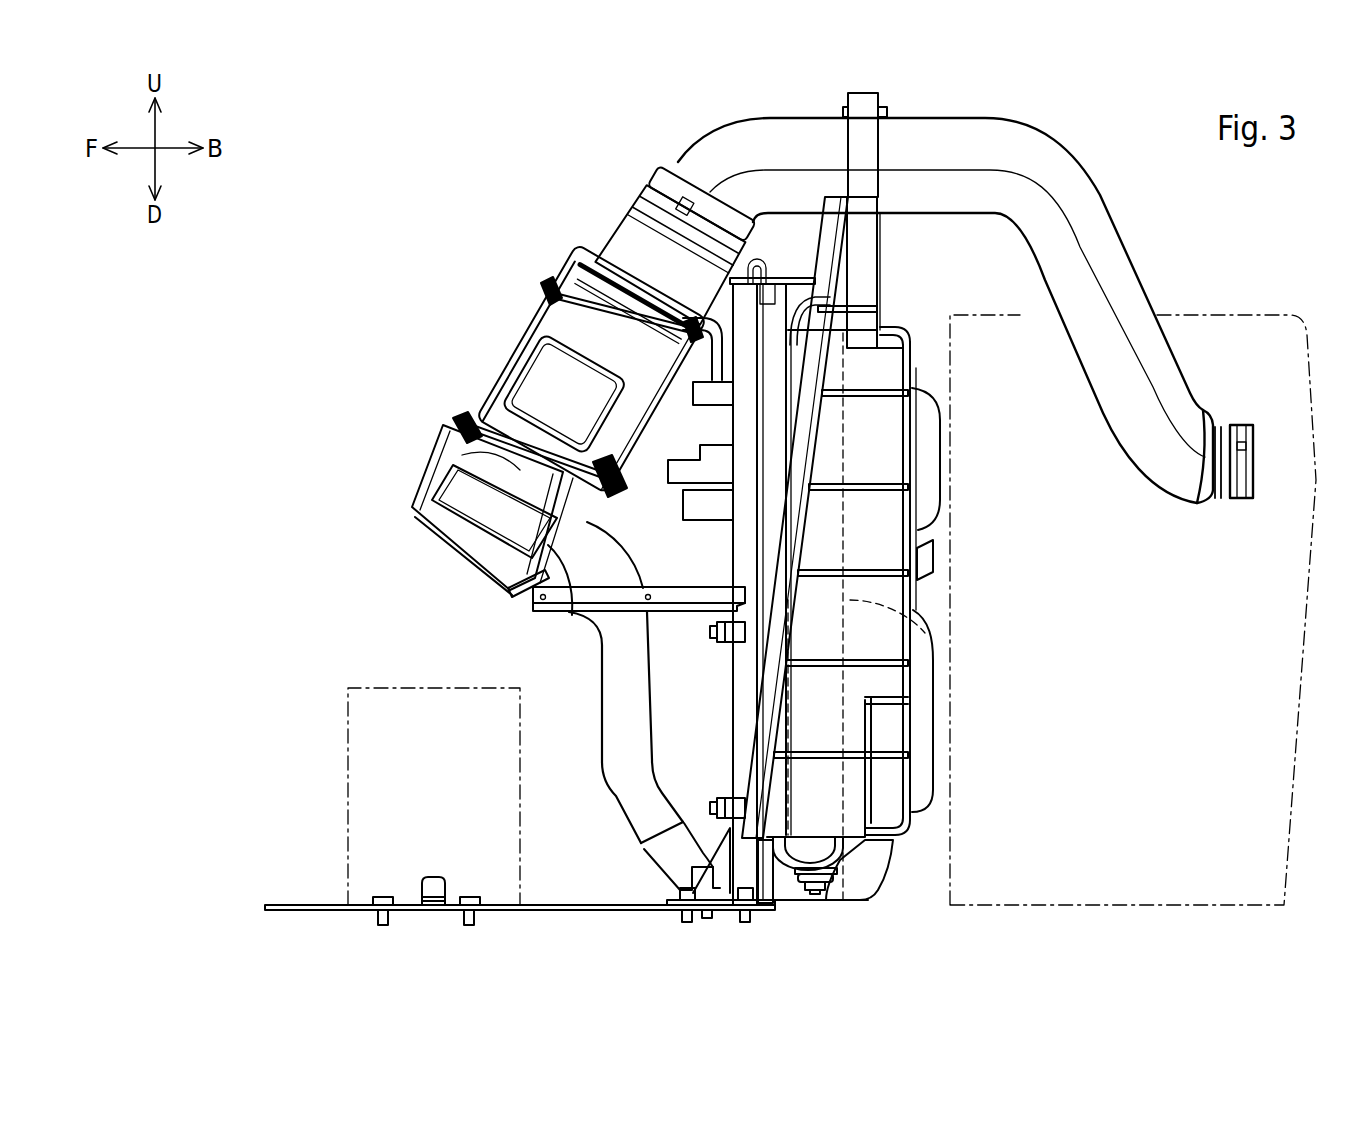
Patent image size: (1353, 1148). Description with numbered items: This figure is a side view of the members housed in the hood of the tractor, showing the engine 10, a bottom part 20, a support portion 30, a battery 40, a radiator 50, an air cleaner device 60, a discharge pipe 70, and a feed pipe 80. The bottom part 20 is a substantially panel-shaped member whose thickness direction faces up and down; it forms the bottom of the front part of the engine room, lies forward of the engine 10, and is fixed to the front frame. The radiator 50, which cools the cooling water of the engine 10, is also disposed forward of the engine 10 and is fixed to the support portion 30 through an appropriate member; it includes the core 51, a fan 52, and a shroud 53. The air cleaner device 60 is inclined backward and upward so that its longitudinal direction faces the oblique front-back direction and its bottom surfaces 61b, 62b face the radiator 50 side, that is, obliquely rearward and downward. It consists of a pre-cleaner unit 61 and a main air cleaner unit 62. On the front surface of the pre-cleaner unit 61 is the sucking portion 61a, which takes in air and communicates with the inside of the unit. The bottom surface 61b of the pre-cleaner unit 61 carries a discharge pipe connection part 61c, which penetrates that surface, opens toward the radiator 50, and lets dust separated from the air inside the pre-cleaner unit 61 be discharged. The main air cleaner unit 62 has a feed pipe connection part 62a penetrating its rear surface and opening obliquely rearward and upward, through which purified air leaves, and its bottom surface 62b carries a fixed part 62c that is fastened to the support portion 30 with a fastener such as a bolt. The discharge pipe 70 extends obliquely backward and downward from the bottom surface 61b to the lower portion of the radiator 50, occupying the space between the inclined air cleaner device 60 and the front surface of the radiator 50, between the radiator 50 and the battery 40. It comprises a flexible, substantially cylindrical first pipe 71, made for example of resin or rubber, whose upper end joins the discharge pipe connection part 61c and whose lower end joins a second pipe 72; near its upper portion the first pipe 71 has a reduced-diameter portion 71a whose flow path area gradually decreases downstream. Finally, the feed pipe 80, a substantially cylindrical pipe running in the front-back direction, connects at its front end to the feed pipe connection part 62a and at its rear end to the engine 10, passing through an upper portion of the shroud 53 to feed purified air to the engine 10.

The engine 10 is at (1217, 312).
The bottom part 20 is at (302, 903).
The support portion 30 is at (740, 433).
The battery 40 is at (348, 688).
The radiator 50 is at (1012, 561).
The core 51 is at (925, 633).
The fan 52 is at (925, 700).
The shroud 53 is at (883, 373).
The air cleaner device 60 is at (438, 276).
The pre-cleaner unit 61 is at (440, 470).
The sucking portion 61a is at (440, 547).
The bottom surface 61b is at (532, 590).
The discharge pipe connection part 61c is at (597, 533).
The main air cleaner unit 62 is at (520, 357).
The feed pipe connection part 62a is at (660, 170).
The bottom surface 62b is at (713, 380).
The fixed part 62c is at (613, 490).
The discharge pipe 70 is at (549, 758).
The first pipe 71 is at (617, 783).
The reduced-diameter portion 71a is at (620, 627).
The second pipe 72 is at (677, 853).
The feed pipe 80 is at (1113, 263).